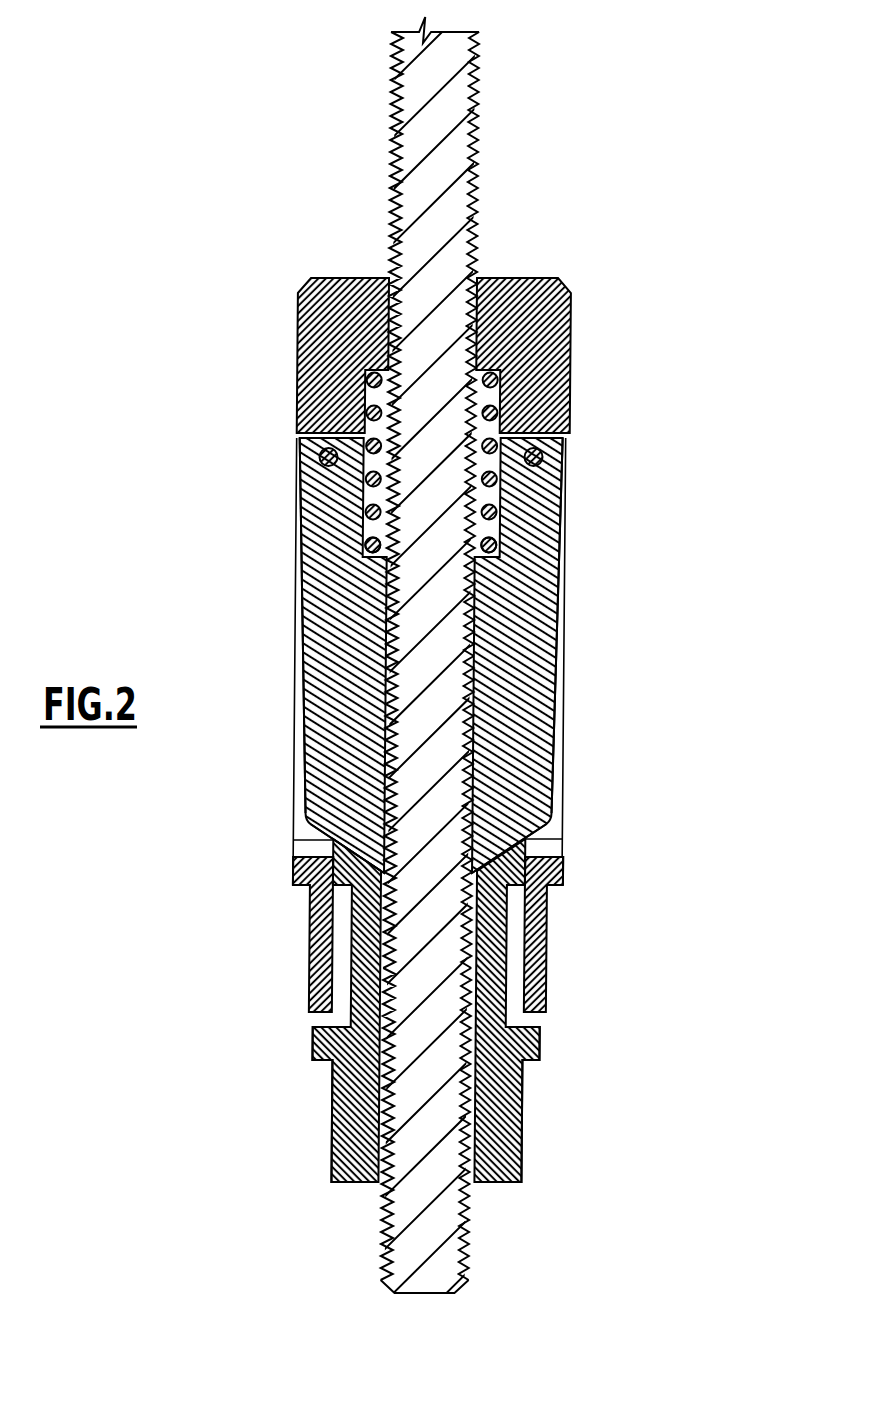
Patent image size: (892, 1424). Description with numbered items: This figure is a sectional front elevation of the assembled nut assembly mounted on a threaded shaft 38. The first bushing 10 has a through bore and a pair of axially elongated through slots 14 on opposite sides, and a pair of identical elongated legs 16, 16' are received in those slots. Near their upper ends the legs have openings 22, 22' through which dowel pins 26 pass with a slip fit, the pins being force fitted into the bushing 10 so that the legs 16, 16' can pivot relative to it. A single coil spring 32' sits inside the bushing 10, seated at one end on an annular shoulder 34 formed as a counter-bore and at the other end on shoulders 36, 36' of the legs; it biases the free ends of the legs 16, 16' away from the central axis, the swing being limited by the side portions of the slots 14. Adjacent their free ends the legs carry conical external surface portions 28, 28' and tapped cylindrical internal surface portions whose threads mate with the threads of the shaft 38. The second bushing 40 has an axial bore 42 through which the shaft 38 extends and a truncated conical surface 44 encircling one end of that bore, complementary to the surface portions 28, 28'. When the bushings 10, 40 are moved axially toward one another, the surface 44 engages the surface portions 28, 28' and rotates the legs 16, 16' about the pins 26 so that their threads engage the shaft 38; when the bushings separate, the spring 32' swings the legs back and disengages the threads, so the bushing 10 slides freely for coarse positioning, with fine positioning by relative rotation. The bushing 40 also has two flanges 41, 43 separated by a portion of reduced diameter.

The bushing 10 is at (570, 309).
The through slot 14 is at (567, 437).
The leg 16 is at (544, 655).
The leg 16' is at (300, 655).
The opening 22 is at (587, 625).
The opening 22' is at (264, 625).
The dowel pin 26 is at (543, 458).
The external surface portion 28 is at (550, 827).
The external surface portion 28' is at (306, 840).
The coil spring 32' is at (313, 463).
The annular shoulder 34 is at (527, 368).
The shoulder 36 is at (548, 566).
The shoulder 36' is at (311, 570).
The threaded shaft 38 is at (405, 1268).
The second bushing 40 is at (358, 984).
The flange 41 is at (356, 888).
The axial bore 42 is at (380, 1197).
The flange 43 is at (319, 1040).
The conical surface 44 is at (567, 862).